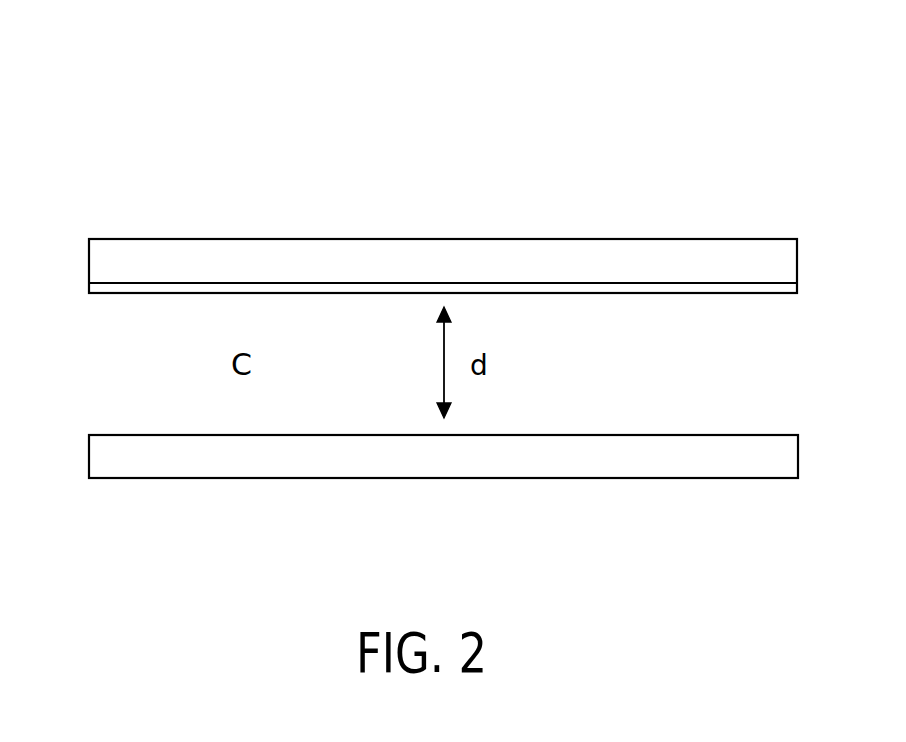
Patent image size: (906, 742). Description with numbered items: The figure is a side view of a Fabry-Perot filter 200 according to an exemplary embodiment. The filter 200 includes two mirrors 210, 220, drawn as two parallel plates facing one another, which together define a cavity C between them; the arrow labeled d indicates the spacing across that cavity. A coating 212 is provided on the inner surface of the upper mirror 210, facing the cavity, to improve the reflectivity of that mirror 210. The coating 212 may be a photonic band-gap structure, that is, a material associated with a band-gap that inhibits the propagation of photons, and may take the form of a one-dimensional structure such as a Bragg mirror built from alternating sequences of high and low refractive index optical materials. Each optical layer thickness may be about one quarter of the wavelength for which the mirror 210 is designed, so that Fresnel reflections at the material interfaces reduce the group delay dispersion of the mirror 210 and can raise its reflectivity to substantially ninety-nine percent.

The Fabry-Perot filter 200 is at (311, 92).
The mirror 210 is at (89, 255).
The coating 212 is at (597, 293).
The mirror 220 is at (89, 450).